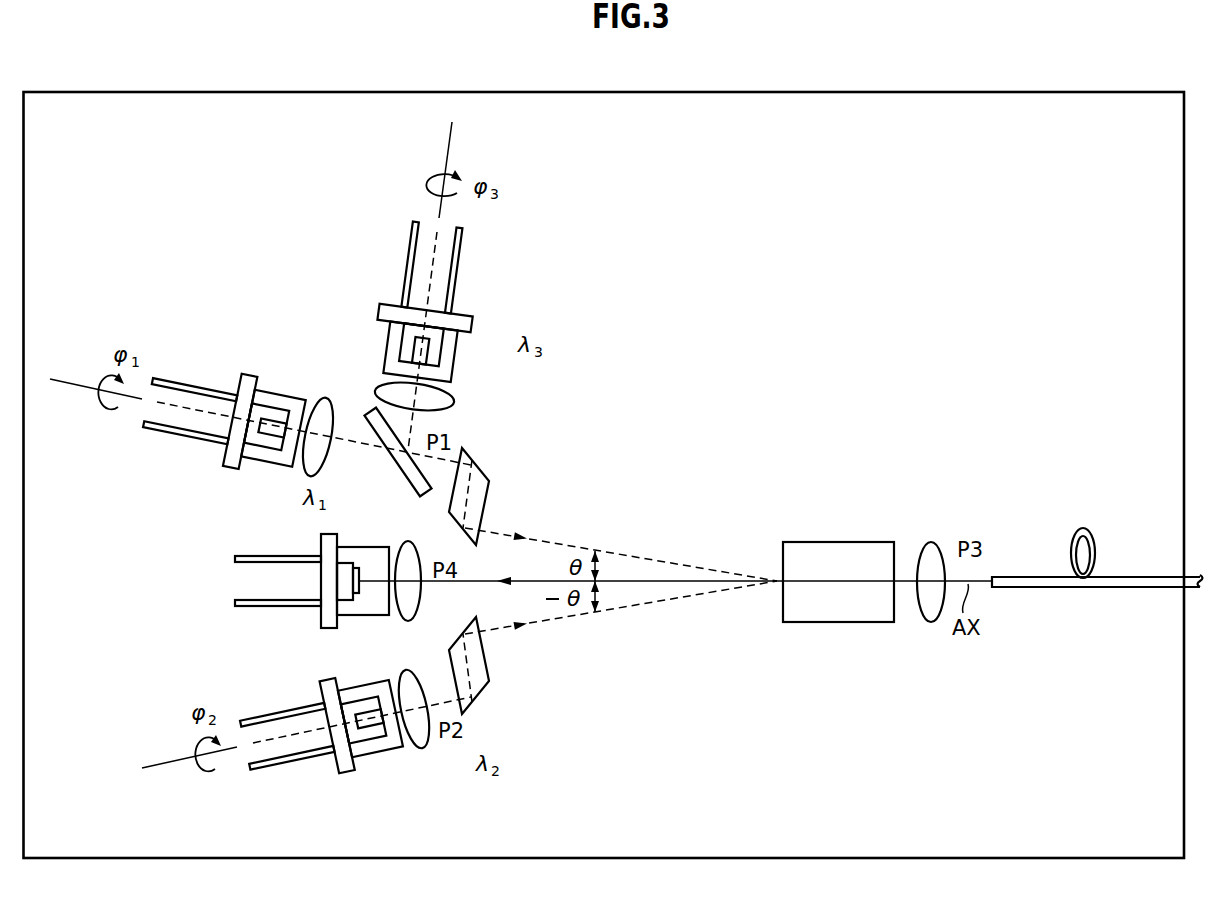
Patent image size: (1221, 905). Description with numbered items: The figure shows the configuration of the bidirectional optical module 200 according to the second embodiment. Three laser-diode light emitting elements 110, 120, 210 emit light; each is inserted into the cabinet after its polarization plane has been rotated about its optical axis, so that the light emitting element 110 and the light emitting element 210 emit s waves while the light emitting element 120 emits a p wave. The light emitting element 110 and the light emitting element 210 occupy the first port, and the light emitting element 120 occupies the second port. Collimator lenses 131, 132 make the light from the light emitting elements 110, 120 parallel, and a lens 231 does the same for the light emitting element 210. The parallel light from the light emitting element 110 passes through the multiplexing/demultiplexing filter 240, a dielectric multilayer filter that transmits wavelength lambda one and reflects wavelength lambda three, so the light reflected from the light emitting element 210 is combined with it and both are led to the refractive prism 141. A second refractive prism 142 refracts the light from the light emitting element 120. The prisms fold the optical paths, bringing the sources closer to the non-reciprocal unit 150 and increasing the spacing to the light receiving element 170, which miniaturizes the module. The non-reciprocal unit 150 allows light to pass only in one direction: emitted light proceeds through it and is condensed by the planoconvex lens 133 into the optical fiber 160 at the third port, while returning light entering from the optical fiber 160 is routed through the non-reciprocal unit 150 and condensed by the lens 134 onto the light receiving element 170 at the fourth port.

The bidirectional optical module 200 is at (1040, 91).
The light emitting element 110 is at (268, 390).
The light emitting element 120 is at (367, 758).
The light emitting element 210 is at (466, 315).
The lens 131 is at (327, 397).
The lens 132 is at (420, 748).
The lens 231 is at (455, 395).
The lens 133 is at (930, 542).
The lens 134 is at (407, 622).
The refractive prism 141 is at (483, 475).
The refractive prism 142 is at (482, 690).
The non-reciprocal unit 150 is at (837, 540).
The optical fiber 160 is at (1017, 576).
The light receiving element 170 is at (352, 617).
The multiplexing/demultiplexing filter 240 is at (402, 467).